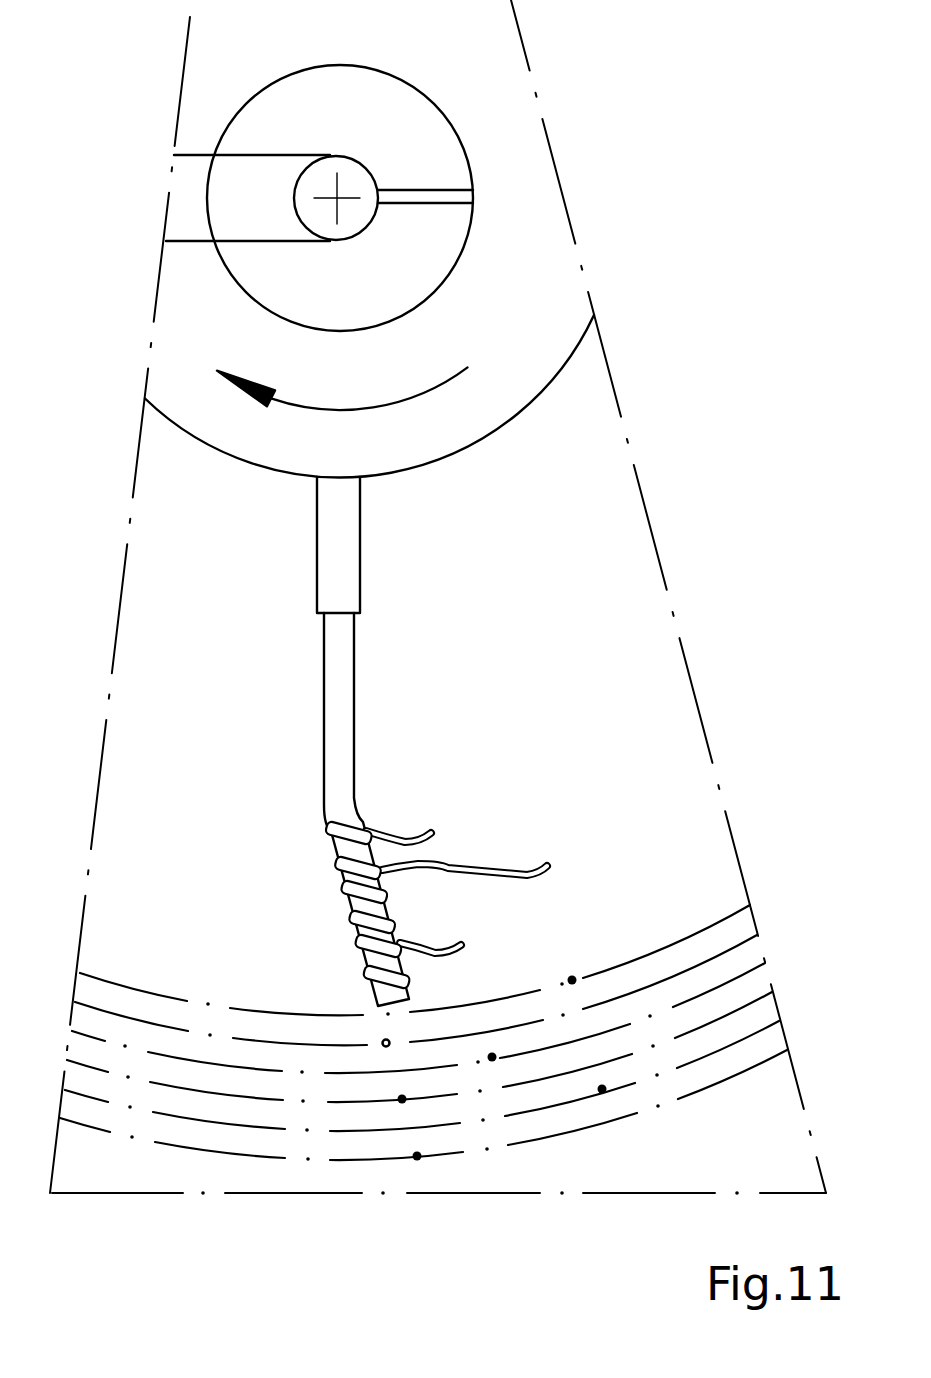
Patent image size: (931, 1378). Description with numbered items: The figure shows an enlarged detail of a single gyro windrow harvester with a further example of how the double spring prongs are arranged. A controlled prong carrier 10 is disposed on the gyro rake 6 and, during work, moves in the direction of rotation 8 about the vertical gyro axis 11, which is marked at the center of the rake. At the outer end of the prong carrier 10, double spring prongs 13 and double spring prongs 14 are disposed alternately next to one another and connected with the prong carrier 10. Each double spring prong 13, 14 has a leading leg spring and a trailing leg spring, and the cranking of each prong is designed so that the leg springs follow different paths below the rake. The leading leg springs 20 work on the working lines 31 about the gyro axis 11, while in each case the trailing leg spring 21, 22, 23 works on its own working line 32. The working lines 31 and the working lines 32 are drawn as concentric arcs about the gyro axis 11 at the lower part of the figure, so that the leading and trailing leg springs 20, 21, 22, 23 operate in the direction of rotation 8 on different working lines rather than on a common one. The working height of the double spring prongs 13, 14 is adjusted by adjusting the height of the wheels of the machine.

The gyro rake 6 is at (508, 459).
The direction of rotation 8 is at (337, 412).
The prong carrier 10 is at (348, 680).
The gyro axis 11 is at (337, 197).
The double spring prong 13 is at (352, 929).
The double spring prong 14 is at (337, 870).
The leading leg spring 20 is at (417, 1156).
The trailing leg spring 21 is at (422, 1143).
The trailing leg spring 22 is at (492, 1057).
The trailing leg spring 23 is at (602, 1089).
The working lines 31 is at (423, 1098).
The working lines 32 is at (422, 1063).